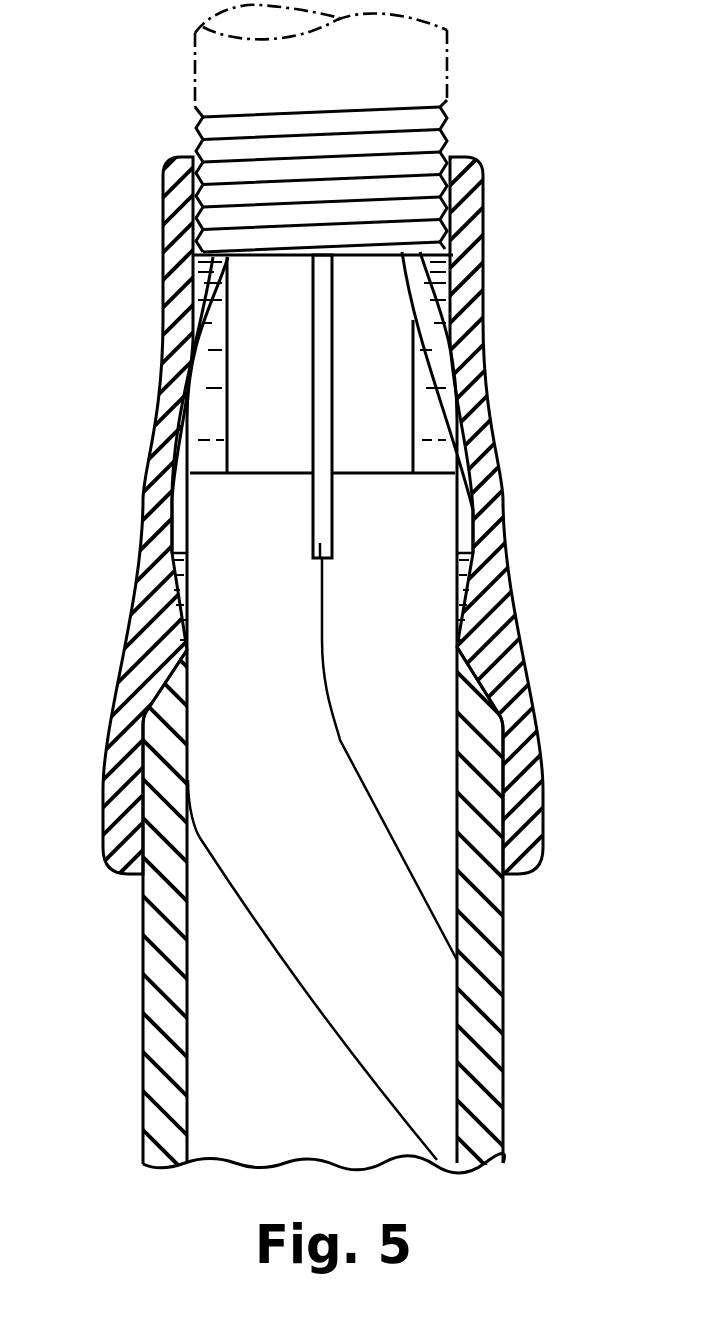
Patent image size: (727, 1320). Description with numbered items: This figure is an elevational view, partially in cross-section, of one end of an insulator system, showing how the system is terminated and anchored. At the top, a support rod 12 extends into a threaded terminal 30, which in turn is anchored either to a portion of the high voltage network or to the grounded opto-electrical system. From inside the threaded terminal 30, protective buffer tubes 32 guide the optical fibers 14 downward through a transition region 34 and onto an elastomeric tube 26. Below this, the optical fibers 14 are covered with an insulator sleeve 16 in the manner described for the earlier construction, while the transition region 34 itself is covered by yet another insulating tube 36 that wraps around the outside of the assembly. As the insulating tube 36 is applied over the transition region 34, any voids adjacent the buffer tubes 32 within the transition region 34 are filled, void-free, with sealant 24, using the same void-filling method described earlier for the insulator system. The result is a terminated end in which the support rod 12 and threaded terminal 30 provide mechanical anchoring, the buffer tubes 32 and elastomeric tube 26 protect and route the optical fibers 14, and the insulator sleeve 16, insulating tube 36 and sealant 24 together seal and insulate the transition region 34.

The support rod 12 is at (388, 408).
The optical fibers 14 is at (423, 893).
The insulator sleeve 16 is at (487, 993).
The sealant 24 is at (200, 280).
The elastomeric tube 26 is at (433, 590).
The threaded terminal 30 is at (407, 140).
The protective buffer tubes 32 is at (320, 543).
The transition region 34 is at (75, 258).
The insulating tube 36 is at (527, 677).